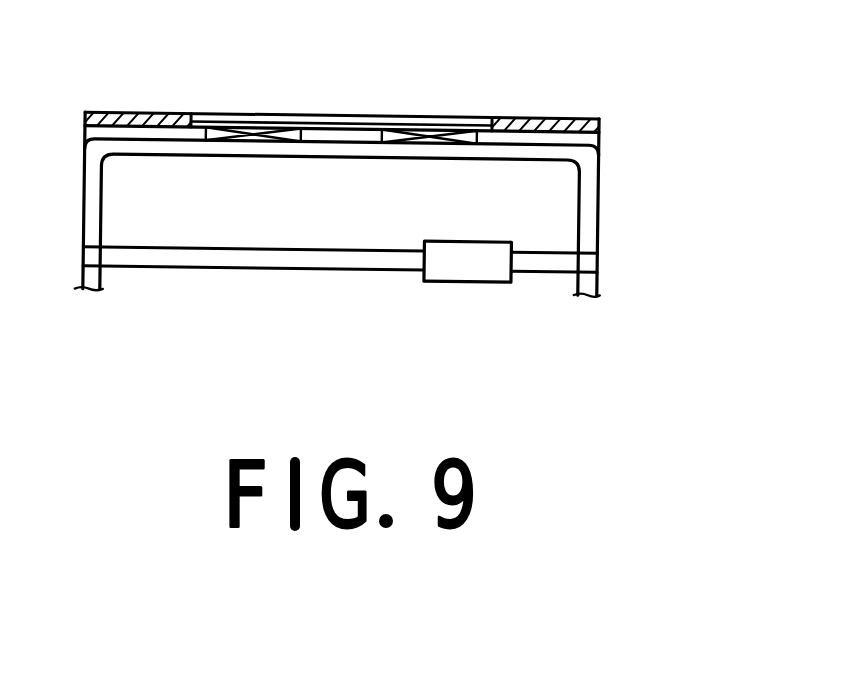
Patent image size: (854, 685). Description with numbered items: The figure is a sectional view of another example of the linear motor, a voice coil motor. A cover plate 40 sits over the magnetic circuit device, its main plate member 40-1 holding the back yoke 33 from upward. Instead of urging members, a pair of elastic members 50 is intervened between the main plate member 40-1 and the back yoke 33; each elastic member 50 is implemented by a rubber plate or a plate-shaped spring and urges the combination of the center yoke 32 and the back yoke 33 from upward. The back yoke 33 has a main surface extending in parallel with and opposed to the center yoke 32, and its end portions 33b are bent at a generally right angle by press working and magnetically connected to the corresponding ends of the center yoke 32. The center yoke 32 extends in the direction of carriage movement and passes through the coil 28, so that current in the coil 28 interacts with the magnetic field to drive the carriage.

The cover plate 40 is at (583, 113).
The main plate member 40-1 is at (362, 117).
The elastic member 50 is at (255, 115).
The back yoke 33 is at (340, 157).
The end portion 33b is at (593, 208).
The center yoke 32 is at (285, 263).
The coil 28 is at (470, 272).